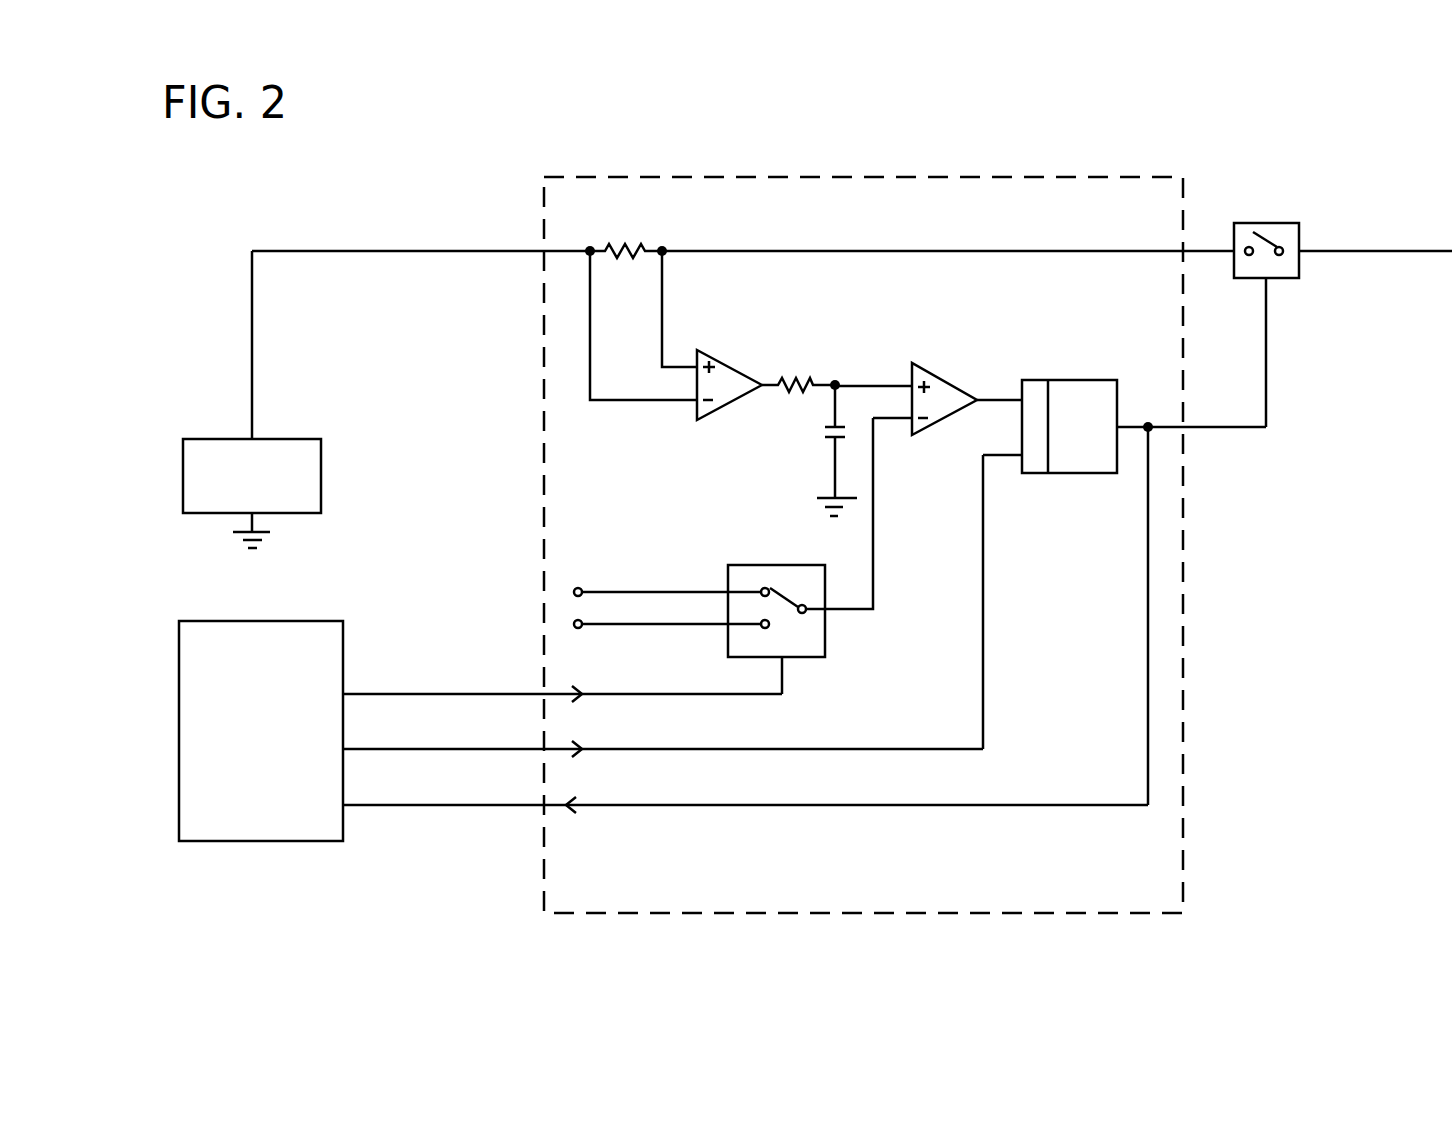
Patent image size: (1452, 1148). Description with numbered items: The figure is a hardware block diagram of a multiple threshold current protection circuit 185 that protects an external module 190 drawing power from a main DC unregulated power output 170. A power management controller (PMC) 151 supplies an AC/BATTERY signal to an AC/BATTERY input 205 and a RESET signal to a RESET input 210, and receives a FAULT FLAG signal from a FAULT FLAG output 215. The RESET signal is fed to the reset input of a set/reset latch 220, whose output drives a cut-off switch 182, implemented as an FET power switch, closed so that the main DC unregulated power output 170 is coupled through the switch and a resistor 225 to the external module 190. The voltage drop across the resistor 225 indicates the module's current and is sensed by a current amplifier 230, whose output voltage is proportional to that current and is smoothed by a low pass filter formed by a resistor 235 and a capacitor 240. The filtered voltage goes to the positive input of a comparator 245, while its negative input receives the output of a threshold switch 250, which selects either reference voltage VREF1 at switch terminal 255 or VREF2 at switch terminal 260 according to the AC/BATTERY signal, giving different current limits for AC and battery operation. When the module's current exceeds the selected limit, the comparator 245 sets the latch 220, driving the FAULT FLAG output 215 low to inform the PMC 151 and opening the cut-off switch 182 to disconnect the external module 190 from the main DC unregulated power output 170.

The power management controller (PMC) 151 is at (307, 621).
The main DC unregulated power output 170 is at (1441, 256).
The cut-off switch 182 is at (1260, 223).
The multiple threshold current protection circuit 185 is at (1183, 868).
The external module 190 is at (287, 439).
The AC/BATTERY input 205 is at (472, 694).
The RESET input 210 is at (433, 749).
The FAULT FLAG output 215 is at (472, 805).
The set/reset latch 220 is at (1085, 380).
The resistor 225 is at (638, 245).
The current amplifier 230 is at (733, 403).
The resistor 235 is at (812, 378).
The capacitor 240 is at (828, 443).
The comparator 245 is at (926, 368).
The threshold switch 250 is at (763, 565).
The switch terminal 255 is at (588, 590).
The switch terminal 260 is at (588, 627).